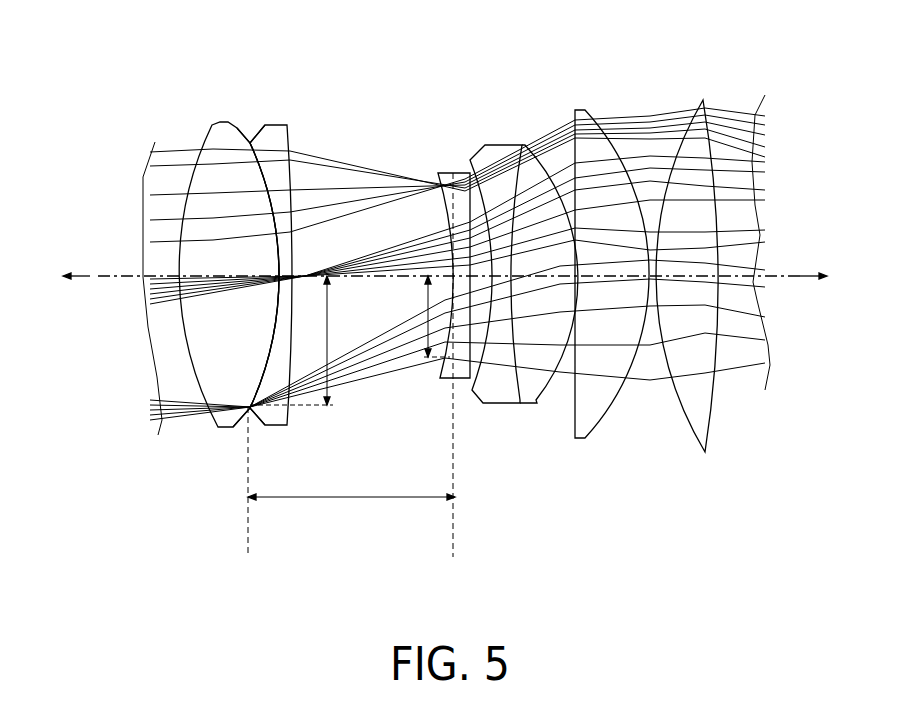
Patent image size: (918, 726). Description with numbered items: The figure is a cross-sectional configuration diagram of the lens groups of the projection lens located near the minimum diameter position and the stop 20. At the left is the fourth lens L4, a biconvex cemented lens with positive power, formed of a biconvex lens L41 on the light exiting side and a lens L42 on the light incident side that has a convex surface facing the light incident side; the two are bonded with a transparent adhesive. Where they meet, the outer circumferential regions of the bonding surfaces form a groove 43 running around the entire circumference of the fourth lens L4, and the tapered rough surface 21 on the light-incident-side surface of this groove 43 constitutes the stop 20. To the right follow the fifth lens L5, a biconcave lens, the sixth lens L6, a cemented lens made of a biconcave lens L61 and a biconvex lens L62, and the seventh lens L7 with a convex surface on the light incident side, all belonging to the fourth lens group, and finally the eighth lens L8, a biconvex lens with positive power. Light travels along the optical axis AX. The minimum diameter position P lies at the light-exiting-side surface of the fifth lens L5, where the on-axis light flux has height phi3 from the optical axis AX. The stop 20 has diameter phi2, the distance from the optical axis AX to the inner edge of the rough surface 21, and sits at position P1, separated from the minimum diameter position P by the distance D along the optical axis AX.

The stop 20 is at (246, 135).
The rough surface 21 is at (241, 284).
The groove 43 is at (254, 124).
The fourth lens L4 is at (318, 57).
The biconvex lens L41 is at (212, 124).
The lens L42 is at (286, 124).
The fifth lens L5 is at (456, 171).
The sixth lens L6 is at (558, 57).
The biconcave lens L61 is at (494, 144).
The biconvex lens L62 is at (528, 144).
The seventh lens L7 is at (576, 109).
The eighth lens L8 is at (703, 99).
The optical axis AX is at (110, 274).
The minimum diameter position P is at (456, 377).
The position of the stop P1 is at (249, 494).
The distance D is at (351, 489).
The diameter of the stop phi2 is at (302, 340).
The light flux diameter phi3 is at (426, 316).